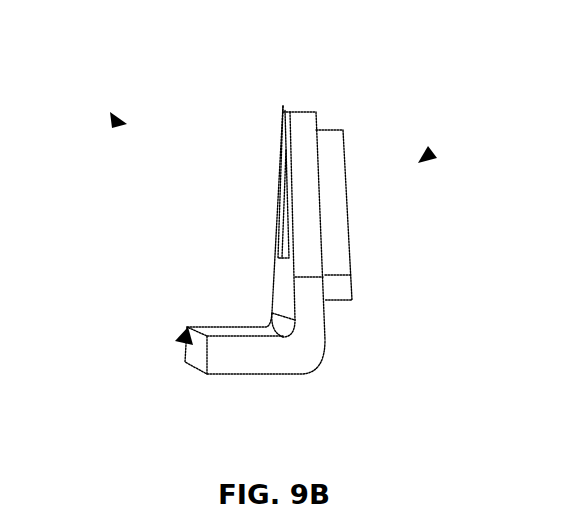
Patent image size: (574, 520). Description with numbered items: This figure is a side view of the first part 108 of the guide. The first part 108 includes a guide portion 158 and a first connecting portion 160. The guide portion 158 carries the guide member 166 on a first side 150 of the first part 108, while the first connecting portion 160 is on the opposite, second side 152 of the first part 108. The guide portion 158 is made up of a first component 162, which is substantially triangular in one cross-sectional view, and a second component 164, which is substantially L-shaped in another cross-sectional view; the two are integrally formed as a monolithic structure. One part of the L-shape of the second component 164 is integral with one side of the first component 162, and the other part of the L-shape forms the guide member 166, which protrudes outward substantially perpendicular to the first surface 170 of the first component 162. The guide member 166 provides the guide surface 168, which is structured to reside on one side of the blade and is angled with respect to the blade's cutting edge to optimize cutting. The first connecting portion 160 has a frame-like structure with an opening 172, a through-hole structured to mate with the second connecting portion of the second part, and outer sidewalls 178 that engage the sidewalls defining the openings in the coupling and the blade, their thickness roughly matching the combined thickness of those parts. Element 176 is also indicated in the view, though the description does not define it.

The first part 108 is at (478, 63).
The first side 150 is at (115, 116).
The second side 152 is at (433, 156).
The guide portion 158 is at (314, 105).
The first connecting portion 160 is at (347, 121).
The first component 162 is at (233, 278).
The second component 164 is at (140, 268).
The guide member 166 is at (183, 333).
The guide surface 168 is at (245, 376).
The first surface 170 is at (285, 275).
The opening 172 is at (287, 237).
The flange lower portion 176 is at (310, 229).
The outer sidewalls 178 is at (333, 172).